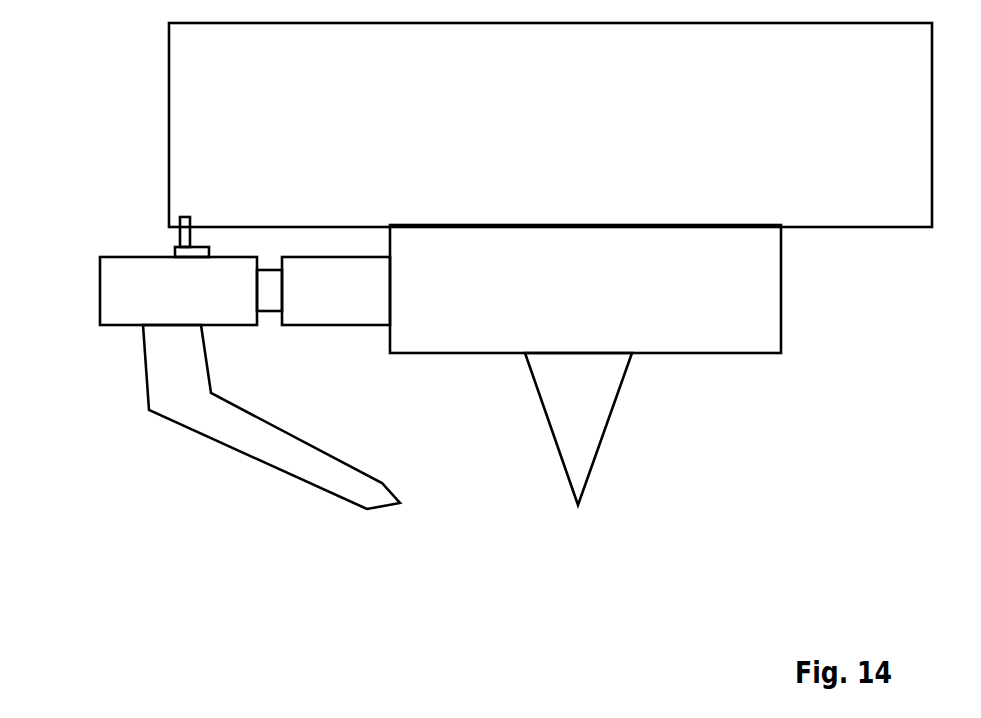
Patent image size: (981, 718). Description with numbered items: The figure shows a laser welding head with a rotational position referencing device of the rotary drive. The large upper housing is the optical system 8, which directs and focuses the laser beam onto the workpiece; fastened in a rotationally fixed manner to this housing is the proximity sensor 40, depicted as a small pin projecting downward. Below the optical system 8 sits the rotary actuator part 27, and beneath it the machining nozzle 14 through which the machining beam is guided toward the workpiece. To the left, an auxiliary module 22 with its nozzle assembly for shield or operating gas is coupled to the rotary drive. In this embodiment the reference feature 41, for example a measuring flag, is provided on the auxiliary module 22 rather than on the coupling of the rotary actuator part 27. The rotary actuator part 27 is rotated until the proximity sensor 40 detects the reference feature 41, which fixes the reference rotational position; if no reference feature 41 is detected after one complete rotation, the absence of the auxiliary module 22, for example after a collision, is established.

The optical system 8 is at (486, 134).
The rotary actuator part 27 is at (555, 294).
The machining nozzle 14 is at (558, 415).
The second auxiliary module 22 is at (118, 370).
The proximity sensor 40 is at (178, 230).
The reference feature 41 is at (172, 253).